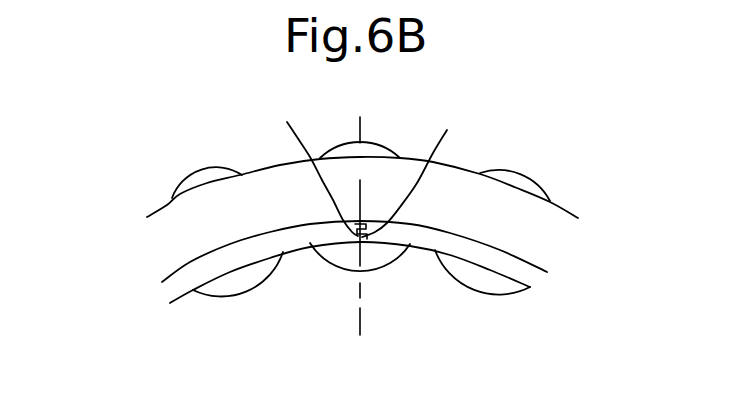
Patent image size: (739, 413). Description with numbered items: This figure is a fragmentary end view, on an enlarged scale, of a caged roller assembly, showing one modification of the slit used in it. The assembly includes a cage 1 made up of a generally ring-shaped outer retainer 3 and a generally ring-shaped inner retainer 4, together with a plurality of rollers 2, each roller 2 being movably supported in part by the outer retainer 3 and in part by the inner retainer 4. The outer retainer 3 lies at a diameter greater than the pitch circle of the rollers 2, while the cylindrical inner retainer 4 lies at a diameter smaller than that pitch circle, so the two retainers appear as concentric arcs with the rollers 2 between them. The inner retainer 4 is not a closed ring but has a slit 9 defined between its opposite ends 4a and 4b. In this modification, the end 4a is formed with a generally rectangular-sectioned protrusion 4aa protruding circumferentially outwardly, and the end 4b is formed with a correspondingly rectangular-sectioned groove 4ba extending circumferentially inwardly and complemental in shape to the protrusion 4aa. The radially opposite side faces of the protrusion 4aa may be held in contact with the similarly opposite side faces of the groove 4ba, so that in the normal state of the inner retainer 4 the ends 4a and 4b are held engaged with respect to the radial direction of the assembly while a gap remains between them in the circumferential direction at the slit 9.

The cage 1 is at (83, 145).
The roller 2 is at (517, 178).
The outer retainer 3 is at (202, 202).
The inner retainer 4 is at (207, 269).
The end of inner retainer 4a is at (385, 232).
The end of inner retainer 4b is at (342, 238).
The rectangular-sectioned protrusion 4aa is at (418, 164).
The rectangular-sectioned groove 4ba is at (309, 162).
The slit 9 is at (362, 240).